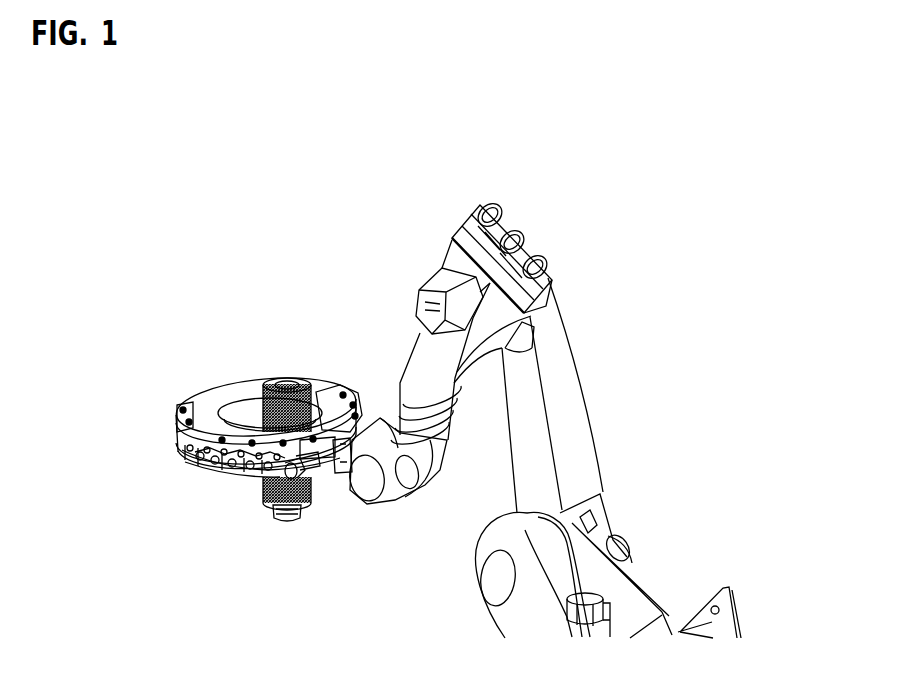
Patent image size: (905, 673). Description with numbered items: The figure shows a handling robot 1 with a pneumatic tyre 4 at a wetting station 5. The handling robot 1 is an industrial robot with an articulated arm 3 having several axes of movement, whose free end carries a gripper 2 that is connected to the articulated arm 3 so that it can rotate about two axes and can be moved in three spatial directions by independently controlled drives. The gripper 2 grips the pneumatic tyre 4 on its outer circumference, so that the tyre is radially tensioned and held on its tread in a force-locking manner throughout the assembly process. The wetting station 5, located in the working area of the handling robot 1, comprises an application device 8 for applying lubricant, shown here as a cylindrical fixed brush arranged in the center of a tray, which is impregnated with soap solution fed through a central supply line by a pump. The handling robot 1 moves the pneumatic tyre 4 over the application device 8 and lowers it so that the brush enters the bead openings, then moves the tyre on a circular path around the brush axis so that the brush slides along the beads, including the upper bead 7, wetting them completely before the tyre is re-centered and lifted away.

The handling robot 1 is at (598, 371).
The gripper 2 is at (351, 395).
The articulated arm 3 is at (430, 327).
The pneumatic tyre 4 is at (255, 391).
The wetting station 5 is at (289, 545).
The upper bead 7 is at (228, 402).
The application device 8 is at (265, 498).